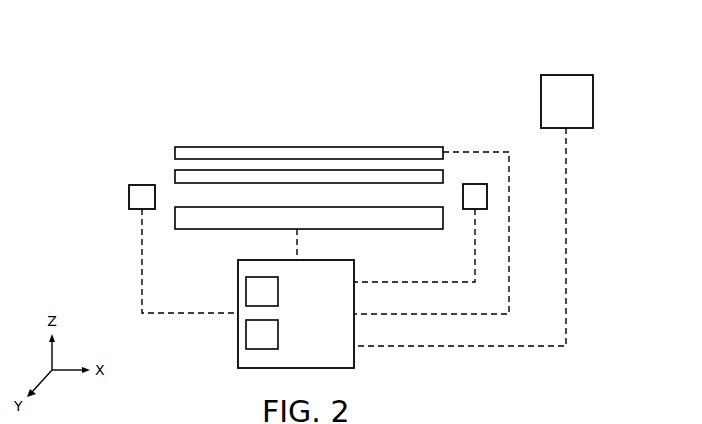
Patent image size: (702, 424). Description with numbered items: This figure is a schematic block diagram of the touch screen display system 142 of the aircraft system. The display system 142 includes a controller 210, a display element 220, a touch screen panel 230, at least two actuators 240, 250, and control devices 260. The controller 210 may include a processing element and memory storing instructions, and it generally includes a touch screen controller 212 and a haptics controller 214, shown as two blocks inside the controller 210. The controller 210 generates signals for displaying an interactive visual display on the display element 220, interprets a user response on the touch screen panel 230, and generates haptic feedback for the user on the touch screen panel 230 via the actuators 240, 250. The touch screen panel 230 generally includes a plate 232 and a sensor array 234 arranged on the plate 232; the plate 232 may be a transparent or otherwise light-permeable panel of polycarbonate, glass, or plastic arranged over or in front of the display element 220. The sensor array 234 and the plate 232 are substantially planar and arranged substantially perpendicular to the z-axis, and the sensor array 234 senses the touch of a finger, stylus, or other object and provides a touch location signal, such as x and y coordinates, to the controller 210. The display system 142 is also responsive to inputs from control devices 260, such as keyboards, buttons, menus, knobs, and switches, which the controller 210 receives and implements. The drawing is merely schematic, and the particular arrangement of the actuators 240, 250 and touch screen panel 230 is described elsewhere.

The touch screen display system 142 is at (150, 48).
The controller 210 is at (238, 338).
The touch screen controller 212 is at (278, 338).
The haptics controller 214 is at (278, 295).
The display element 220 is at (192, 229).
The touch screen panel 230 is at (178, 138).
The plate 232 is at (235, 170).
The sensor array 234 is at (297, 147).
The actuator 240 is at (129, 197).
The actuator 250 is at (475, 184).
The control devices 260 is at (541, 99).